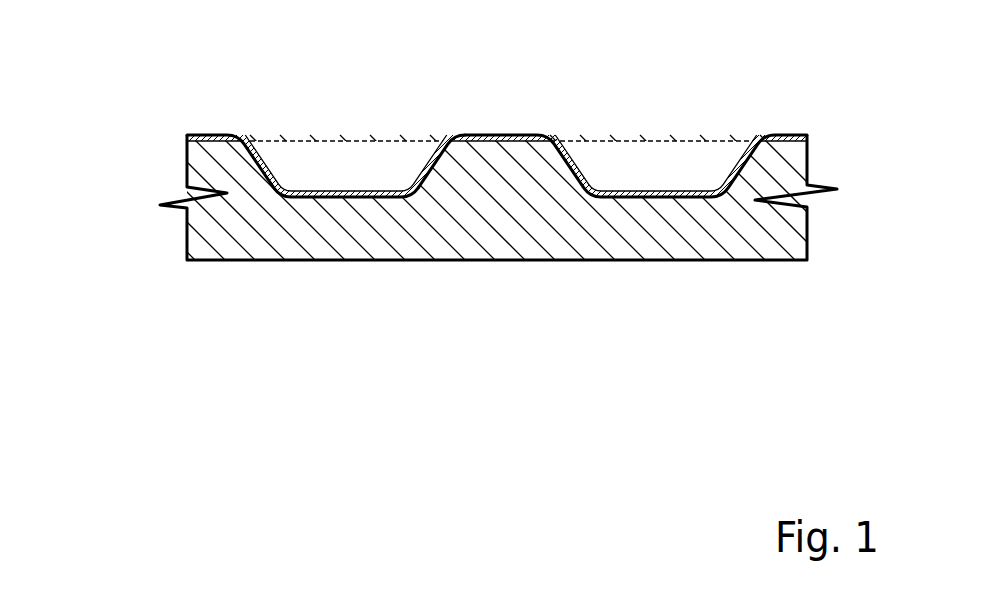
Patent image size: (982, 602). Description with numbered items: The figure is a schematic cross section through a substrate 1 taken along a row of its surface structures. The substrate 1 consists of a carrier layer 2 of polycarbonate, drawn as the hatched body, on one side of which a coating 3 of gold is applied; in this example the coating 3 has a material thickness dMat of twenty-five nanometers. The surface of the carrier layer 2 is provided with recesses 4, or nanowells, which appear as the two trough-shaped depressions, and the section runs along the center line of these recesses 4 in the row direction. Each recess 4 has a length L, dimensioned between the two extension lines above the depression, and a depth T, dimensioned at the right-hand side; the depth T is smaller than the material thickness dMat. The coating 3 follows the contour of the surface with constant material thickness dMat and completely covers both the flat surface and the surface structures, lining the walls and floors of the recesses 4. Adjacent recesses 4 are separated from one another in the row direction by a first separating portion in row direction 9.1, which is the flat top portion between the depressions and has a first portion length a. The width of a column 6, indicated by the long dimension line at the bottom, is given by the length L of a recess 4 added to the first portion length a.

The substrate 1 is at (118, 3).
The carrier layer 2 is at (198, 140).
The coating 3 is at (186, 134).
The recesses 4 is at (362, 160).
The column 6 is at (242, 413).
The first separating portion in row direction 9.1 is at (527, 137).
The first portion length a is at (552, 423).
The length L is at (242, 141).
The depth T is at (812, 141).
The material thickness dMat is at (285, 142).